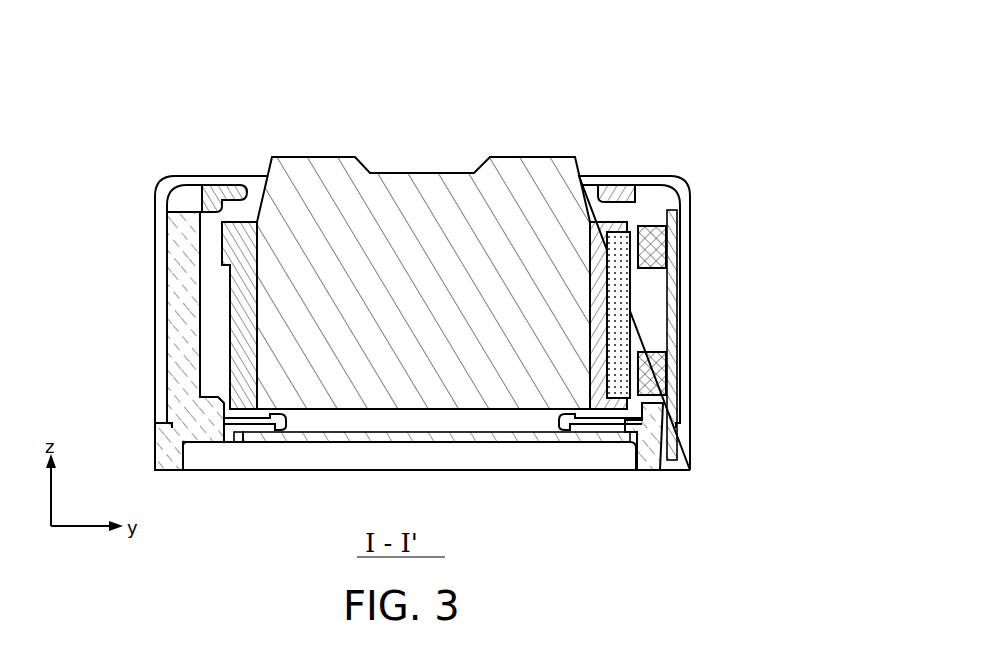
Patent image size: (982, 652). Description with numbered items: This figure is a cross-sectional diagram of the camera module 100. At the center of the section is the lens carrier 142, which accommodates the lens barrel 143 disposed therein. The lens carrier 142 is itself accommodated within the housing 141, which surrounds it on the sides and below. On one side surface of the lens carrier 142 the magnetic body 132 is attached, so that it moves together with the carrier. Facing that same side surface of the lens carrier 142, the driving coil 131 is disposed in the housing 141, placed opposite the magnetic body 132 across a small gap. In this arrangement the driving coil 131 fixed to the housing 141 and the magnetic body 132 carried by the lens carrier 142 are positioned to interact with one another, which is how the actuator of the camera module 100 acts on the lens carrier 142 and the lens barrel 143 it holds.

The camera module 100 is at (414, 258).
The driving coil 131 is at (655, 247).
The magnetic body 132 is at (625, 305).
The housing 141 is at (183, 242).
The lens carrier 142 is at (237, 230).
The lens barrel 143 is at (312, 168).